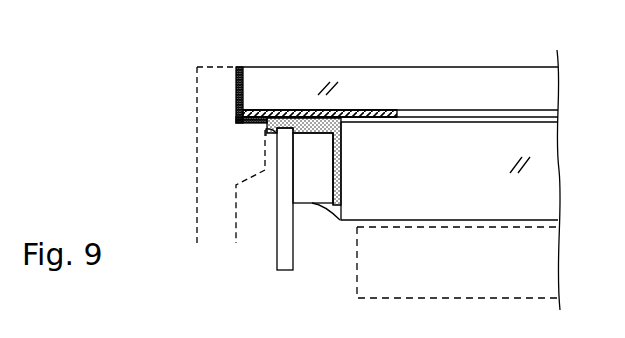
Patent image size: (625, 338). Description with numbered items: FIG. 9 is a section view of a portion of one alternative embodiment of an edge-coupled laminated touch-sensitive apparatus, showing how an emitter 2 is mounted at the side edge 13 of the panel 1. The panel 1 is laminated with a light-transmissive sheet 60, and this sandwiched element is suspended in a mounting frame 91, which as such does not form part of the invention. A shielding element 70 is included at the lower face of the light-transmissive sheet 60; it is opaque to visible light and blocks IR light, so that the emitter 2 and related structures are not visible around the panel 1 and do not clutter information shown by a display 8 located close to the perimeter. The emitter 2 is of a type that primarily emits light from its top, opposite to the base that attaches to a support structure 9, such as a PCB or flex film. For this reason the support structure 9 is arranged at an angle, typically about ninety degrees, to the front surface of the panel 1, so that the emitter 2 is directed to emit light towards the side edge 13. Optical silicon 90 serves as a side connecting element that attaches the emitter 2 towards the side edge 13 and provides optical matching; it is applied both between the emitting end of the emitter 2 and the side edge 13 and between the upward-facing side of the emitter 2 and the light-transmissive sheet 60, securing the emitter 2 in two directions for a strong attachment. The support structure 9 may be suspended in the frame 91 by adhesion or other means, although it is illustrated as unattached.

The panel 1 is at (465, 180).
The emitter 2 is at (318, 177).
The display 8 is at (513, 276).
The support structure 9 is at (283, 245).
The side edge 13 is at (345, 175).
The light-transmissive sheet 60 is at (464, 100).
The shielding element 70 is at (355, 112).
The optical silicon 90 is at (308, 122).
The mounting frame 91 is at (208, 157).